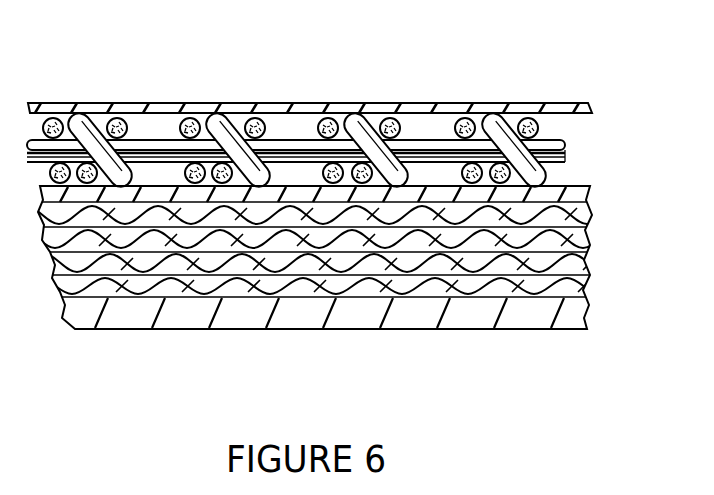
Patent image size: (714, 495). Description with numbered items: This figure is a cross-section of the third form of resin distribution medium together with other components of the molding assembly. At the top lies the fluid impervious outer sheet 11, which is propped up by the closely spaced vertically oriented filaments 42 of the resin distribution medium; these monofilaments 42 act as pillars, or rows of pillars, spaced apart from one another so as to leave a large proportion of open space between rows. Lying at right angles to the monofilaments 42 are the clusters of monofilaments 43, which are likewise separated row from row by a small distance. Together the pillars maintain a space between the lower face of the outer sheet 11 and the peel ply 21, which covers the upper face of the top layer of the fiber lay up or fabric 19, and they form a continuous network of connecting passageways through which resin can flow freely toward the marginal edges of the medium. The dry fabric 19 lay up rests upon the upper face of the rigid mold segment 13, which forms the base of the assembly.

The fluid impervious outer sheet 11 is at (405, 103).
The vertically oriented filaments 42 is at (107, 103).
The clusters of monofilaments 43 is at (173, 158).
The peel ply 21 is at (575, 192).
The fabric 19 is at (585, 250).
The rigid mold segment 13 is at (560, 332).